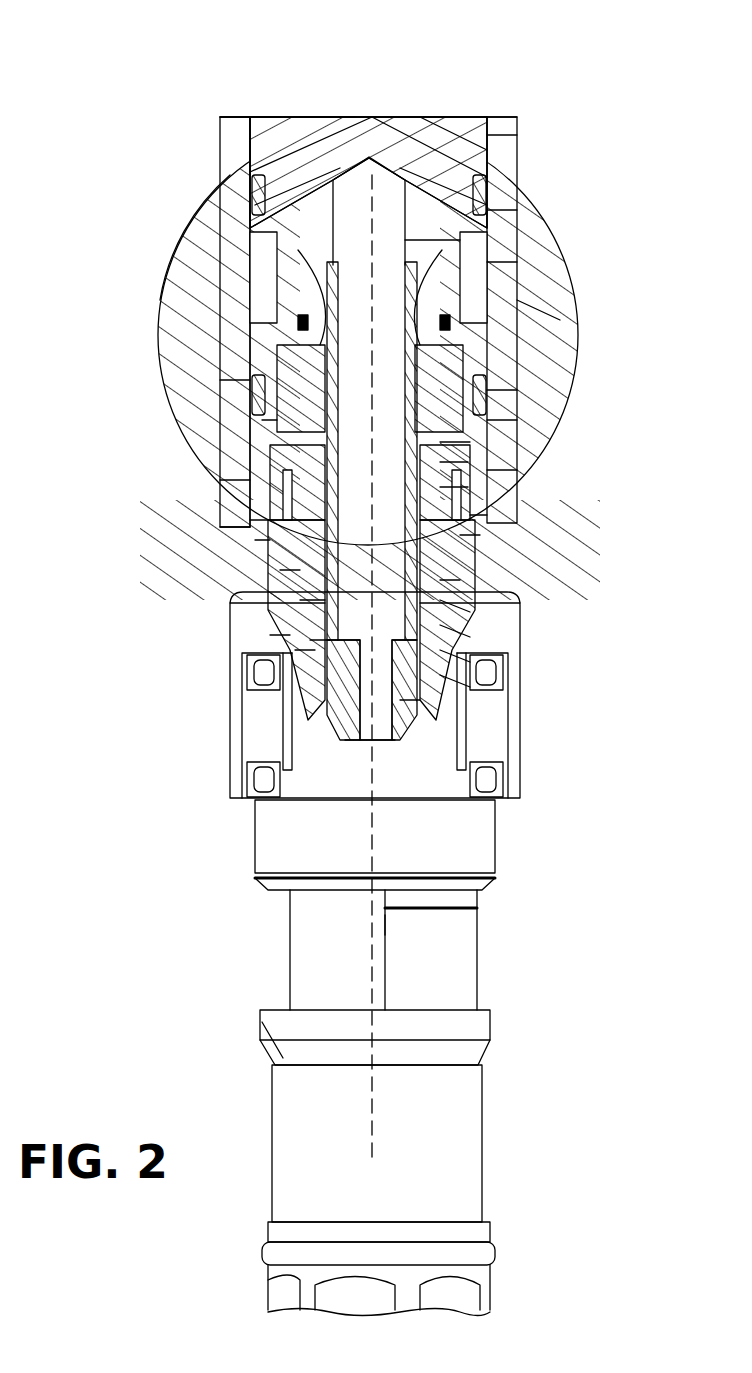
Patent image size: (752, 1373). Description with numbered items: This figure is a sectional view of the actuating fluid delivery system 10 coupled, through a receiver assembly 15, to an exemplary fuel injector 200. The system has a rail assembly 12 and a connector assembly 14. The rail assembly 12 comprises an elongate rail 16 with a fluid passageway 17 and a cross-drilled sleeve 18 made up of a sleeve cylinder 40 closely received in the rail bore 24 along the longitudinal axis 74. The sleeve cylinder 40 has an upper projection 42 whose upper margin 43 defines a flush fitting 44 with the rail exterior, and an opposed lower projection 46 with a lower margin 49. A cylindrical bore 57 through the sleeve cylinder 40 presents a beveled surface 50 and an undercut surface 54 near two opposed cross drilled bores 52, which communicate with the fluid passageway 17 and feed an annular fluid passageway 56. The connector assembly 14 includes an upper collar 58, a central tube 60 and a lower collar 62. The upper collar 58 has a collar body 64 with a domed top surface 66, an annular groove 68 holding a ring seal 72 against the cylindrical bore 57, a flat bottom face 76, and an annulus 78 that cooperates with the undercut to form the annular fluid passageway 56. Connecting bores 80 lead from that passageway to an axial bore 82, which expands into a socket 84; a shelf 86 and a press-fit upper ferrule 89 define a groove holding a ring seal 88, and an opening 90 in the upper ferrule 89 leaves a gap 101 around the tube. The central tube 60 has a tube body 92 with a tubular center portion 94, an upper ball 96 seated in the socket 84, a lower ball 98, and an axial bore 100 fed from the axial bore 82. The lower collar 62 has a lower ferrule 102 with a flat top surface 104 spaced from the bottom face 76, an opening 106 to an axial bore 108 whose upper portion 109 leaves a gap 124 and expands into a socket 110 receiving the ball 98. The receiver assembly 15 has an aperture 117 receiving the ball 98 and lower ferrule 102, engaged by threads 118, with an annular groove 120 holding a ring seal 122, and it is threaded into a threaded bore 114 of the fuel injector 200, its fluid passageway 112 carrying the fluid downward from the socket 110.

The actuating fluid delivery system 10 is at (268, 48).
The rail assembly 12 is at (185, 208).
The connector assembly 14 is at (330, 370).
The receiver assembly 15 is at (520, 640).
The elongate rail 16 is at (166, 220).
The fluid passageway 17 is at (222, 380).
The cross-drilled sleeve 18 is at (237, 112).
The bore 24 is at (240, 500).
The sleeve cylinder 40 is at (200, 115).
The upper projection 42 is at (260, 135).
The upper margin 43 is at (330, 117).
The flush fitting 44 is at (372, 117).
The lower projection 46 is at (250, 520).
The lower margin 49 is at (265, 540).
The beveled surface 50 is at (495, 470).
The cross drilled bores 52 is at (255, 262).
The undercut surface 54 is at (300, 250).
The annular fluid passageway 56 is at (255, 248).
The cylindrical bore 57 is at (262, 117).
The upper collar 58 is at (268, 450).
The central tube 60 is at (320, 600).
The lower collar 62 is at (285, 635).
The collar body 64 is at (410, 117).
The domed top surface 66 is at (445, 117).
The annular groove 68 is at (482, 190).
The ring seal 72 is at (500, 210).
The longitudinal axis 74 is at (385, 925).
The bottom face 76 is at (222, 480).
The annulus 78 is at (490, 262).
The connecting bores 80 is at (252, 185).
The axial bore 82 is at (500, 135).
The socket 84 is at (420, 240).
The shelf 86 is at (300, 322).
The ring seal 88 is at (285, 350).
The upper ferrule 89 is at (252, 395).
The opening 90 is at (265, 420).
The tube body 92 is at (470, 505).
The tubular center portion 94 is at (435, 348).
The ball 96 is at (525, 310).
The ball 98 is at (445, 580).
The axial bore 100 is at (440, 548).
The gap 101 is at (505, 420).
The lower ferrule 102 is at (320, 705).
The flat top surface 104 is at (290, 545).
The opening 106 is at (295, 570).
The axial bore 108 is at (468, 487).
The upper portion 109 is at (470, 442).
The socket 110 is at (492, 660).
The fluid passageway 112 is at (372, 712).
The threaded bore 114 is at (412, 700).
The aperture 117 is at (470, 535).
The threads 118 is at (480, 515).
The annular groove 120 is at (330, 640).
The ring seal 122 is at (310, 650).
The gap 124 is at (468, 462).
The fuel injector 200 is at (455, 848).